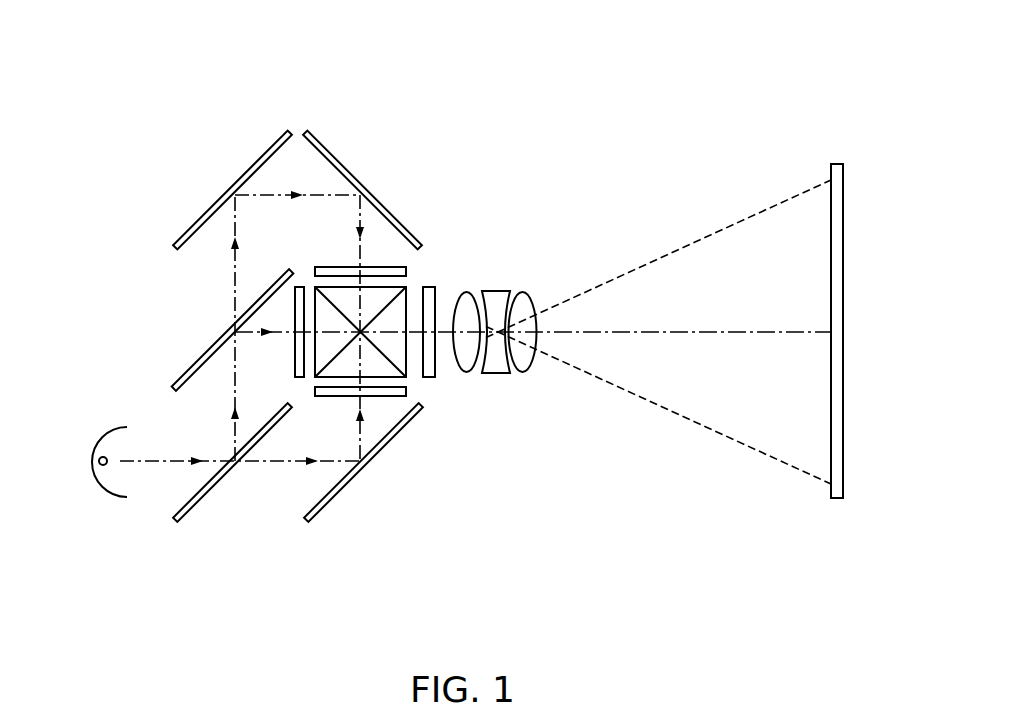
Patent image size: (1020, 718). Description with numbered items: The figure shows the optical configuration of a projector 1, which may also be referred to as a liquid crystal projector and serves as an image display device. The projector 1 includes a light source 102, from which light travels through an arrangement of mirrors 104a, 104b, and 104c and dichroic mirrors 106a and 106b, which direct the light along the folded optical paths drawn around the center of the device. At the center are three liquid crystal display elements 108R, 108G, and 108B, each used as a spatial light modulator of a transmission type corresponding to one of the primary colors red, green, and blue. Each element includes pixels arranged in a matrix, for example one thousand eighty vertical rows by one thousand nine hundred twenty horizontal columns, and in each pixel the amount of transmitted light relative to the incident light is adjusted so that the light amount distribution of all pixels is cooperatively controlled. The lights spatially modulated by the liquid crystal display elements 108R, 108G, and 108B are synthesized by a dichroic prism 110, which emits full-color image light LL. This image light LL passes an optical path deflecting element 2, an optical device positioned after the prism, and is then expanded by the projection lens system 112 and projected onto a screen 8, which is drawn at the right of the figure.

The projector 1 is at (720, 100).
The light source 102 is at (105, 493).
The mirror 104a is at (335, 502).
The mirror 104b is at (255, 162).
The mirror 104c is at (342, 158).
The dichroic mirror 106a is at (203, 502).
The dichroic mirror 106b is at (198, 360).
The liquid crystal display element 108B is at (408, 270).
The liquid crystal display element 108G is at (293, 347).
The liquid crystal display element 108R is at (337, 397).
The dichroic prism 110 is at (408, 288).
The optical path deflecting element 2 is at (438, 363).
The projection lens system 112 is at (537, 377).
The image light LL is at (415, 355).
The screen 8 is at (837, 500).